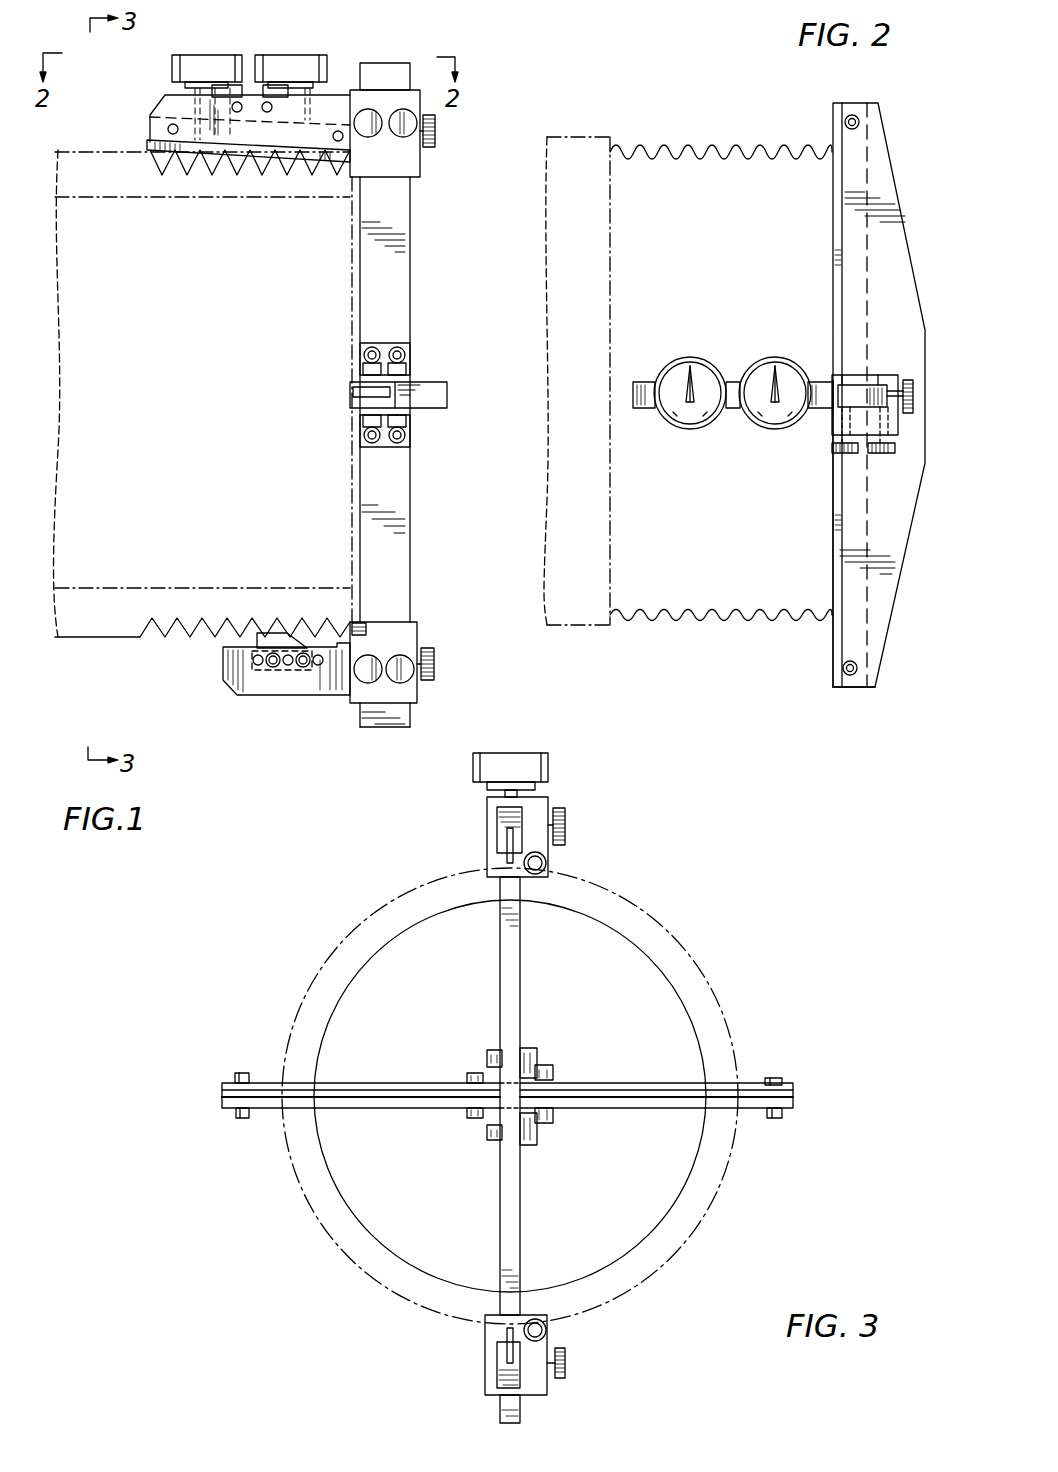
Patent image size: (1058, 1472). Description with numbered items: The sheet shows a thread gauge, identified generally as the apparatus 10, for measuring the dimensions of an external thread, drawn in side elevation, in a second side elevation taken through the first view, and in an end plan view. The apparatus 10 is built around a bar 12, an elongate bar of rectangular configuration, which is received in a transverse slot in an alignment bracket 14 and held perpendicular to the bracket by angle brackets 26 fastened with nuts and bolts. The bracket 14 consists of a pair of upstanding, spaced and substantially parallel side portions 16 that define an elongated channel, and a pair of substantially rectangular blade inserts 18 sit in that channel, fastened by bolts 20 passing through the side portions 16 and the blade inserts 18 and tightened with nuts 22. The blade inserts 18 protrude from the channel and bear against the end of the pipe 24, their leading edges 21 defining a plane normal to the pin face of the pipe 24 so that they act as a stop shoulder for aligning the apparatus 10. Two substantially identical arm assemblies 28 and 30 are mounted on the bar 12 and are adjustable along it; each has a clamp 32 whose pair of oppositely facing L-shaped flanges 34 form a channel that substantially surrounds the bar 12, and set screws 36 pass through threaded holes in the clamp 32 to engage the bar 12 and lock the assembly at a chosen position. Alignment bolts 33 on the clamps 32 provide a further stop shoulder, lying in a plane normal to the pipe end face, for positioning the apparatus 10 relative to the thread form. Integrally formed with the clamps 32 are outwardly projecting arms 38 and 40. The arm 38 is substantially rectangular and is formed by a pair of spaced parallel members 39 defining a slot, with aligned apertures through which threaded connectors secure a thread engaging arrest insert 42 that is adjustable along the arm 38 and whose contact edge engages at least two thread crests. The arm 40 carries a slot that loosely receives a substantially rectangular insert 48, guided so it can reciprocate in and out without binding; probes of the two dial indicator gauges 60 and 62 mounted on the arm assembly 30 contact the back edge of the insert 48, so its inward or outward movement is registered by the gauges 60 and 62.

In FIG. 1, the apparatus 10 is at (472, 182).
In FIG. 1, the bar member 12 is at (392, 292).
In FIG. 2, the bar member 12 is at (852, 385).
In FIG. 3, the bar member 12 is at (522, 981).
In FIG. 2, the alignment bracket 14 is at (890, 553).
In FIG. 2, the side portions 16 is at (858, 640).
In FIG. 3, the side portions 16 is at (274, 1112).
In FIG. 2, the blade inserts 18 is at (832, 675).
In FIG. 2, the bolts 20 is at (843, 665).
In FIG. 3, the bolts 20 is at (778, 1076).
In FIG. 2, the leading edges 21 is at (835, 125).
In FIG. 3, the leading edges 21 is at (270, 1082).
In FIG. 3, the nuts 22 is at (786, 1112).
In FIG. 2, the pipe 24 is at (590, 147).
In FIG. 3, the angle brackets 26 is at (554, 1110).
In FIG. 1, the arm assembly 28 is at (232, 722).
In FIG. 1, the arm assembly 30 is at (261, 40).
In FIG. 1, the clamp 32 is at (400, 692).
In FIG. 1, the alignment bolts 33 is at (360, 622).
In FIG. 3, the alignment bolts 33 is at (547, 862).
In FIG. 2, the L-shaped flanges 34 is at (897, 372).
In FIG. 1, the set screws 36 is at (436, 660).
In FIG. 2, the set screws 36 is at (914, 395).
In FIG. 3, the set screws 36 is at (567, 825).
In FIG. 1, the arm 38 is at (305, 700).
In FIG. 3, the arm 38 is at (540, 1383).
In FIG. 1, the members 39 is at (230, 670).
In FIG. 1, the arm 40 is at (337, 105).
In FIG. 3, the arm 40 is at (537, 807).
In FIG. 1, the thread engaging arrest insert 42 is at (257, 640).
In FIG. 3, the thread engaging arrest insert 42 is at (507, 1332).
In FIG. 1, the insert 48 is at (150, 145).
In FIG. 3, the insert 48 is at (507, 857).
In FIG. 1, the gauge 60 is at (205, 55).
In FIG. 2, the gauge 60 is at (692, 432).
In FIG. 3, the gauge 60 is at (526, 753).
In FIG. 1, the gauge 62 is at (308, 55).
In FIG. 2, the gauge 62 is at (776, 432).